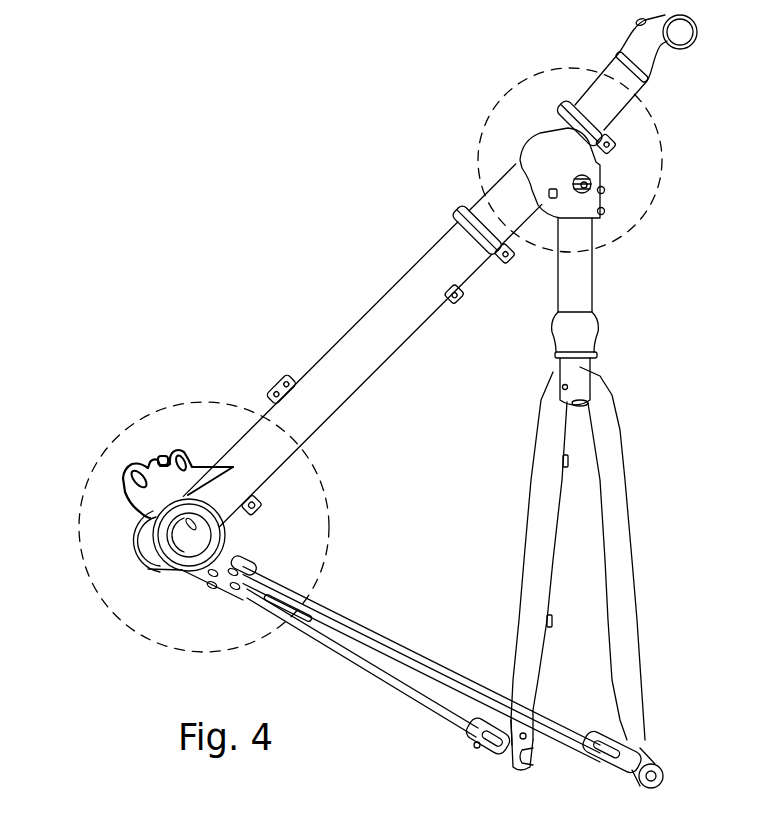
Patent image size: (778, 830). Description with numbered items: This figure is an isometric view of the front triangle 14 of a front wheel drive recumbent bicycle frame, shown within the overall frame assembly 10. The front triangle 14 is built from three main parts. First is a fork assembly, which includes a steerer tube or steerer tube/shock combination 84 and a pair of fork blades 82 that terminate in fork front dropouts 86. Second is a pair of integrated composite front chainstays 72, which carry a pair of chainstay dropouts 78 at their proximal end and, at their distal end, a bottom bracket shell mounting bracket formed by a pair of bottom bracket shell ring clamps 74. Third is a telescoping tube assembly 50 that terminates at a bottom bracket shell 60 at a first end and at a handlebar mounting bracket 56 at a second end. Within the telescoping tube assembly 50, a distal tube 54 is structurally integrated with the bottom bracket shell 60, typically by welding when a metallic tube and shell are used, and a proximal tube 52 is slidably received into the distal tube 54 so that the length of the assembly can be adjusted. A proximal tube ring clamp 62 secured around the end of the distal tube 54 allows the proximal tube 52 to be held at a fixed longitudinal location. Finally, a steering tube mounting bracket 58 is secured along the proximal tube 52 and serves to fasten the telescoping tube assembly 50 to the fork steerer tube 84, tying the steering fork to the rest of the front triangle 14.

The front hinge assembly 10 is at (480, 120).
The front triangle 14 is at (112, 432).
The telescoping tube assembly 50 is at (382, 157).
The proximal tube 52 is at (520, 197).
The distal tube 54 is at (353, 348).
The handlebar mounting bracket 56 is at (652, 53).
The steering tube mounting bracket 58 is at (570, 128).
The bottom bracket shell 60 is at (150, 548).
The proximal tube ring clamp 62 is at (460, 212).
The integrated composite front chainstays 72 is at (380, 670).
The bottom bracket shell ring clamps 74 is at (225, 553).
The chainstay dropouts 78 is at (497, 760).
The fork blades 82 is at (613, 517).
The steerer tube 84 is at (577, 277).
The fork front dropouts 86 is at (533, 747).